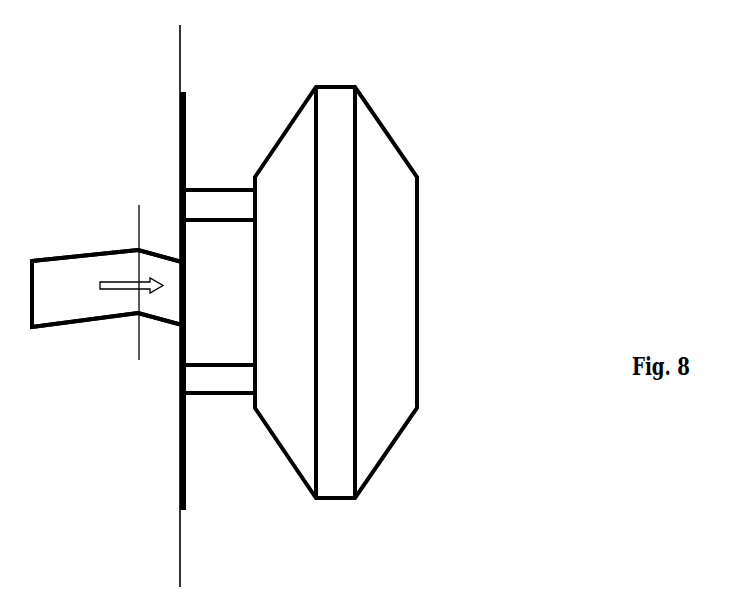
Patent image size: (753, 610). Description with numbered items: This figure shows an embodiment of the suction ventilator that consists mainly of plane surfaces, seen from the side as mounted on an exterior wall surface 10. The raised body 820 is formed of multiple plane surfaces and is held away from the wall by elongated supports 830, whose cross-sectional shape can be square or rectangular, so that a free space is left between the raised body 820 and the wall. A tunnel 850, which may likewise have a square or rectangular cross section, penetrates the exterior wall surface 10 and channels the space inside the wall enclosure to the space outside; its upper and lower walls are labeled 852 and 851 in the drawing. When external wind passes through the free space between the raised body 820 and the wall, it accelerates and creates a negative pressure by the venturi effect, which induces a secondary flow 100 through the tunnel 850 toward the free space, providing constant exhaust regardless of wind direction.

The exterior wall surface 10 is at (190, 52).
The raised body 820 is at (336, 292).
The elongated supports 830 is at (217, 176).
The tunnel 850 is at (72, 304).
The lower wall of duct 851 is at (139, 326).
The upper wall of duct 852 is at (139, 240).
The secondary flow 100 is at (122, 303).